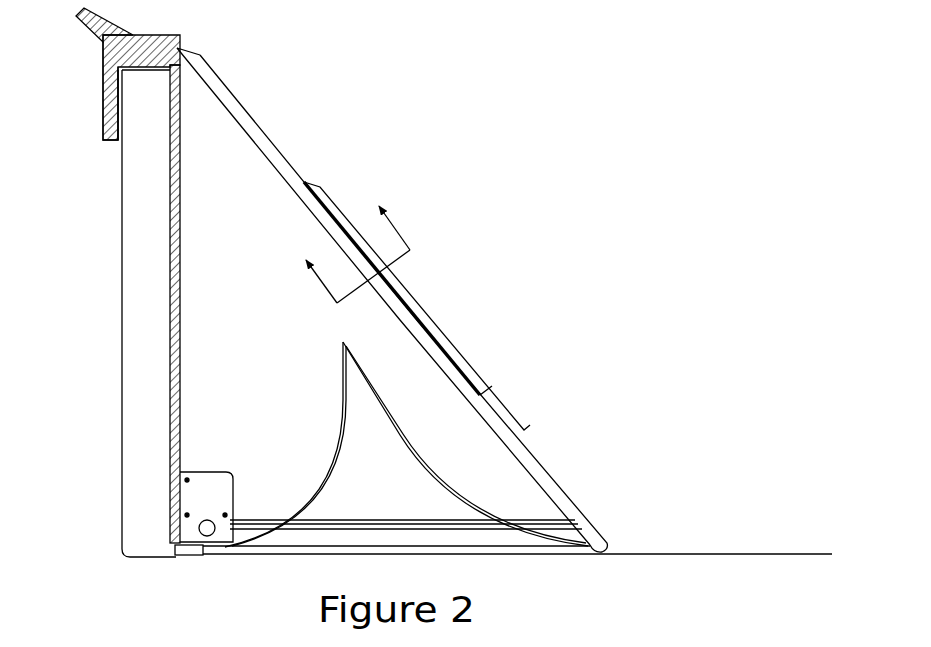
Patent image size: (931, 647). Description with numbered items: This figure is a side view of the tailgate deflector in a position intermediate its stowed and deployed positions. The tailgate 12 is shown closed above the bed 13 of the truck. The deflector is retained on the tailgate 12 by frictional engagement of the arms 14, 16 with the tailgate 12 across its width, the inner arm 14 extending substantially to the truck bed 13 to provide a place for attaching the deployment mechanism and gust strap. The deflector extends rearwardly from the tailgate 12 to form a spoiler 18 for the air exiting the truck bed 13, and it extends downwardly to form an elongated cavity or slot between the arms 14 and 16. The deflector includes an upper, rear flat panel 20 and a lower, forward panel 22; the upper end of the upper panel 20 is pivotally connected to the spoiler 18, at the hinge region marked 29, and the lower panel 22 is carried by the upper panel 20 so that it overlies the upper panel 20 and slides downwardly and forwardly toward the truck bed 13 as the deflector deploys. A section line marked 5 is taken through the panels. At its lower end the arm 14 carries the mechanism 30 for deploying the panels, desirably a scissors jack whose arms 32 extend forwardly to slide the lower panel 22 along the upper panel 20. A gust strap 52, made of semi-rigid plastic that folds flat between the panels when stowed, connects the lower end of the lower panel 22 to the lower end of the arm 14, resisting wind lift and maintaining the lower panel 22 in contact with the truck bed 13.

The tailgate 12 is at (118, 292).
The bed 13 is at (700, 551).
The inner arm 14 is at (186, 318).
The arm 16 is at (108, 150).
The spoiler 18 is at (141, 34).
The upper, rear flat panel 20 is at (266, 124).
The lower, forward panel 22 is at (488, 378).
The upper hinge edge 29 is at (190, 42).
The mechanism 30 is at (237, 494).
The arms of the jack 32 is at (358, 516).
The gust strap 52 is at (335, 358).
The section line 5- 5 is at (346, 240).